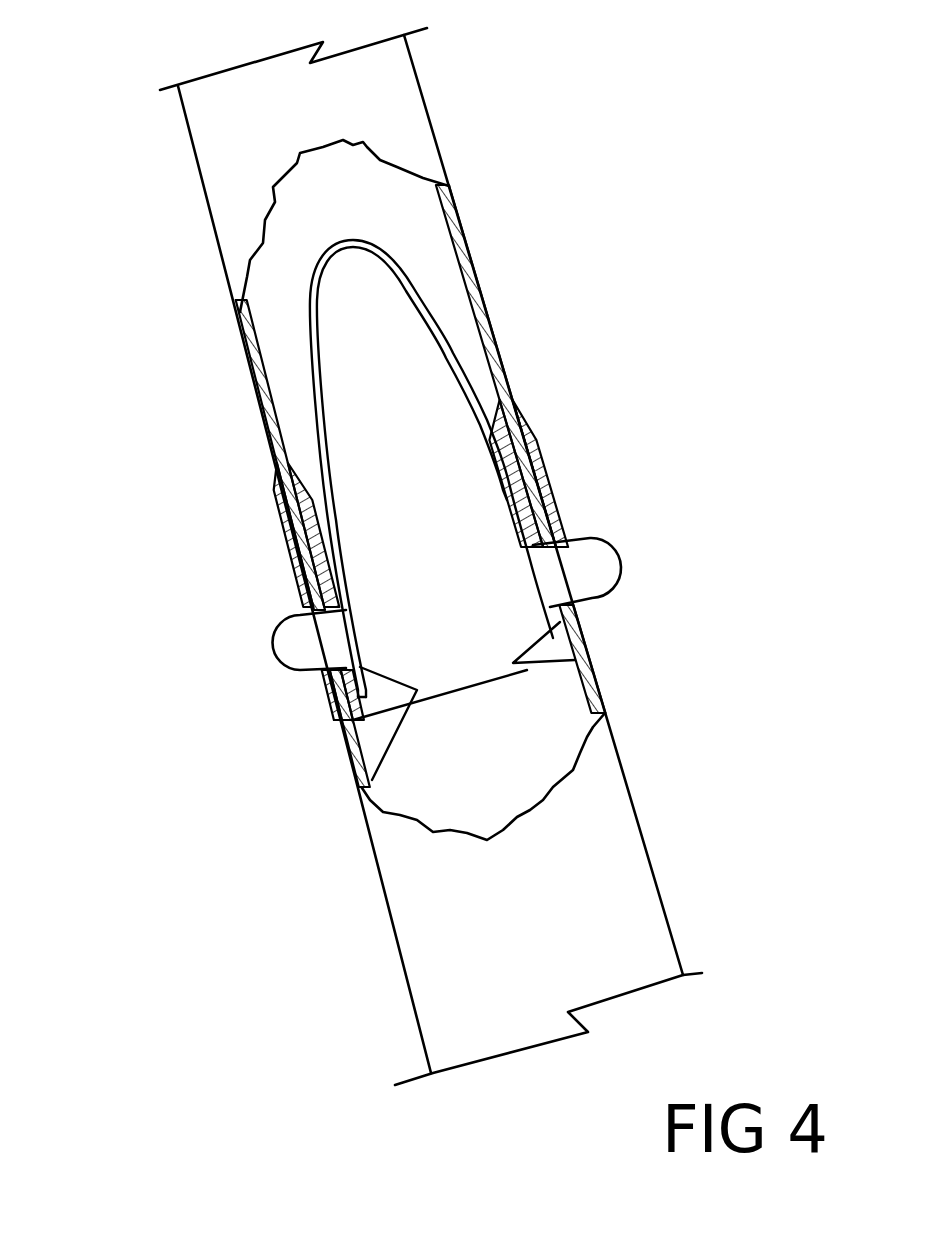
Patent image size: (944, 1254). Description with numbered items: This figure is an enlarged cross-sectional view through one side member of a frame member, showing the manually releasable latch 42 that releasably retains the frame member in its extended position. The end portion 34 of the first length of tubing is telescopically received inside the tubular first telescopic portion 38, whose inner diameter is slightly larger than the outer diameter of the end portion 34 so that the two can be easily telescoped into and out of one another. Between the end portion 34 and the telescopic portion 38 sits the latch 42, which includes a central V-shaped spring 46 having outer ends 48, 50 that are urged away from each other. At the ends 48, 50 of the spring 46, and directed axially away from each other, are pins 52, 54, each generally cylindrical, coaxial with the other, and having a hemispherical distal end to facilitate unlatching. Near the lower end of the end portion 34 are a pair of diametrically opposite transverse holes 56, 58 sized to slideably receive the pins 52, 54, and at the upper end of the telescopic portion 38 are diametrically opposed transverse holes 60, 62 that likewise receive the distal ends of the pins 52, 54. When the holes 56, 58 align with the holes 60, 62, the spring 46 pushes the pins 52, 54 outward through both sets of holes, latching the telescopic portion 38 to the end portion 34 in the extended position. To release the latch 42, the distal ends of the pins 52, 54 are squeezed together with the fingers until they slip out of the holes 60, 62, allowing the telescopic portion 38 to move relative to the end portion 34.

The end portion 34 is at (452, 210).
The first telescopic portion 38 is at (647, 847).
The manually releasable latch 42 is at (396, 606).
The V-shaped spring 46 is at (310, 363).
The outer end of spring 48 is at (372, 780).
The outer end of spring 50 is at (527, 670).
The pin 52 is at (270, 652).
The pin 54 is at (622, 542).
The transverse hole 56 is at (325, 685).
The transverse hole 58 is at (585, 624).
The transverse hole 60 is at (300, 607).
The transverse hole 62 is at (560, 542).